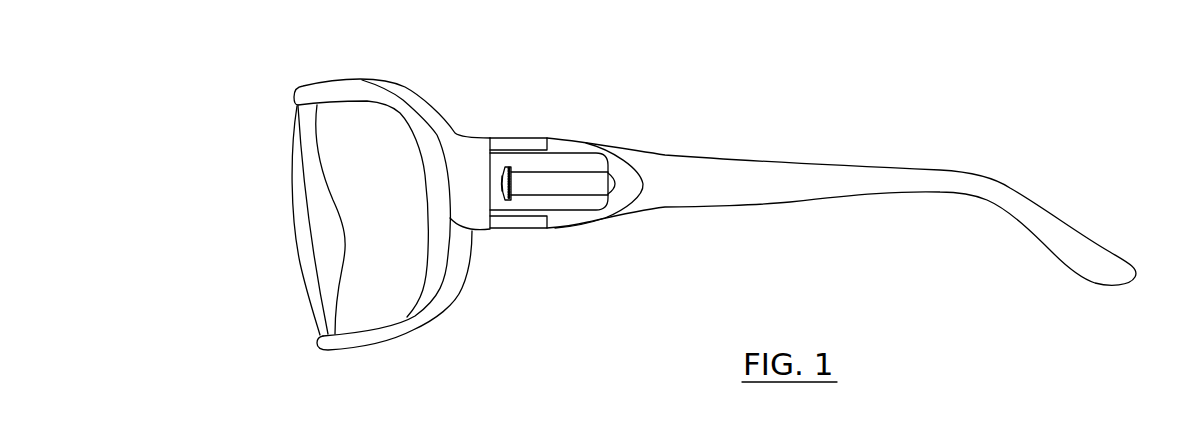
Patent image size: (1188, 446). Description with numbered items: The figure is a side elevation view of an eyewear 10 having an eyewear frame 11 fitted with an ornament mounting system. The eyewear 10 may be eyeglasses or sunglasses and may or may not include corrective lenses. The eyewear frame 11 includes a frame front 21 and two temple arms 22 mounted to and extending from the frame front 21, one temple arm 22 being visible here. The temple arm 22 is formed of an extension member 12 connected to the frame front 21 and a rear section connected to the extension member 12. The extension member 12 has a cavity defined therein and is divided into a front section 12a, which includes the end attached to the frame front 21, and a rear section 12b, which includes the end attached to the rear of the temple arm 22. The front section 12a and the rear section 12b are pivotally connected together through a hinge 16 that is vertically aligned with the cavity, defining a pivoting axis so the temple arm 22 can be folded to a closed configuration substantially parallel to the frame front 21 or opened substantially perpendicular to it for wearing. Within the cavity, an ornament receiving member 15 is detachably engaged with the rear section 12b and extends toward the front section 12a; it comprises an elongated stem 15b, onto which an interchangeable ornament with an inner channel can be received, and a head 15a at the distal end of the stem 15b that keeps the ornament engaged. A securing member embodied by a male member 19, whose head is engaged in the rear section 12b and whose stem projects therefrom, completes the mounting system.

The eyewear 10 is at (222, 120).
The eyewear frame 11 is at (427, 146).
The frame front 21 is at (307, 90).
The extension member 12 is at (483, 138).
The front section 12a is at (527, 145).
The rear section 12b is at (596, 141).
The ornament receiving member 15 is at (538, 169).
The head 15a is at (503, 200).
The elongated stem 15b is at (587, 184).
The hinge 16 is at (547, 224).
The male member 19 is at (620, 186).
The temple arm 22 is at (768, 175).